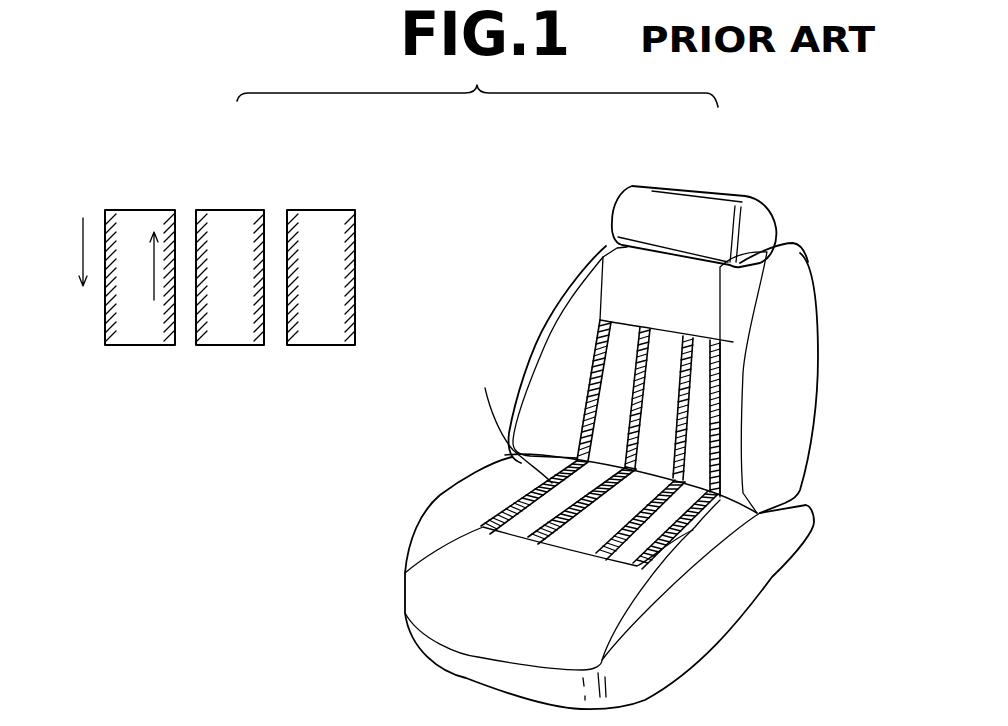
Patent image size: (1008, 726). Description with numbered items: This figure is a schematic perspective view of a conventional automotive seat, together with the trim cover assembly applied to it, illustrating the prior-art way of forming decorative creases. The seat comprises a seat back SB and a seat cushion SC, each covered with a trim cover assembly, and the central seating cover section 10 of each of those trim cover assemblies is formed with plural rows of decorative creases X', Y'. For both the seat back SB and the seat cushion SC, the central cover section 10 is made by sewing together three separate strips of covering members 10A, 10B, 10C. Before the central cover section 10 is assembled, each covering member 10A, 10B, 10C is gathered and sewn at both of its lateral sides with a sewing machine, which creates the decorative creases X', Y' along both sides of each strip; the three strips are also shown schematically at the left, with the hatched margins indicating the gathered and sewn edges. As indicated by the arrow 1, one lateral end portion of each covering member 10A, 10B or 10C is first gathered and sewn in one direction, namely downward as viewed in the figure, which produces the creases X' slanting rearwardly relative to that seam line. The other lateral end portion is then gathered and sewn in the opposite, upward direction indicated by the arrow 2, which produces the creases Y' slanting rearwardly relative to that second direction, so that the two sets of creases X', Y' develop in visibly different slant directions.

The central cover section 10 is at (338, 428).
The covering member 10A is at (137, 346).
The covering member 10B is at (228, 346).
The covering member 10C is at (316, 346).
The decorative creases X' is at (451, 369).
The decorative creases Y' is at (507, 347).
The seat back SB is at (830, 361).
The seat cushion SC is at (751, 613).
The arrow indicating first sewing direction 1 is at (71, 244).
The second sewing direction 2 is at (144, 274).